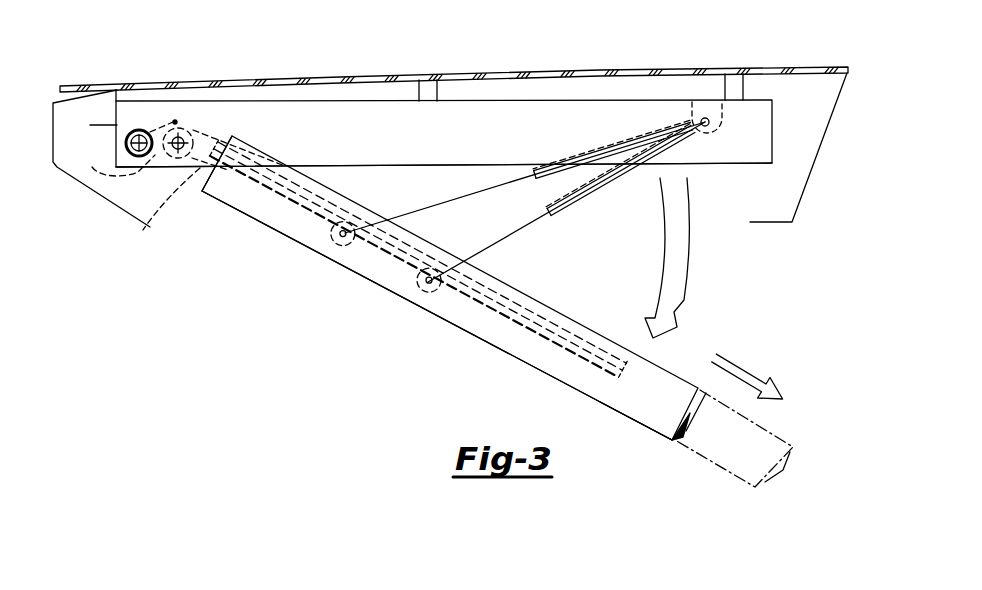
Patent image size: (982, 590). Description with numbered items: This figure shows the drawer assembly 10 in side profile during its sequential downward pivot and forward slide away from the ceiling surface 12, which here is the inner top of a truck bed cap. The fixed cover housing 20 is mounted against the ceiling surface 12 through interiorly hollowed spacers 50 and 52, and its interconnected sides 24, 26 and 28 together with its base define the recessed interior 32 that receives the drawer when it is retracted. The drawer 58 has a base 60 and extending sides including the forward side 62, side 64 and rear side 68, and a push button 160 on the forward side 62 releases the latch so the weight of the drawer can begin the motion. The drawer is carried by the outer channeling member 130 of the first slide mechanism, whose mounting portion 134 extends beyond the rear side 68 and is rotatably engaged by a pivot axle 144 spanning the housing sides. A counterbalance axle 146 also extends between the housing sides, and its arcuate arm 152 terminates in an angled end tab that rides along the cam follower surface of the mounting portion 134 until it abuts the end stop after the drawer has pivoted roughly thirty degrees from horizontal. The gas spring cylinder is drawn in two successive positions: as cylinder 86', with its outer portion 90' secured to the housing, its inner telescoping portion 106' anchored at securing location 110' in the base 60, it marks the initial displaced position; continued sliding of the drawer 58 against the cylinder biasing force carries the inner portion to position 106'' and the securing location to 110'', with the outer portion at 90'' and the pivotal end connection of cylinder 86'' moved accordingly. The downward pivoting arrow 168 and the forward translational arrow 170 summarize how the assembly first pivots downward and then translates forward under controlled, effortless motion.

The drawer assembly 10 is at (192, 273).
The ceiling surface 12 is at (519, 78).
The fixed cover housing 20 is at (328, 85).
The side of cover housing 24 is at (773, 147).
The side of cover housing 26 is at (358, 157).
The side of cover housing 28 is at (90, 125).
The recessed interior 32 is at (712, 190).
The spacers 50 is at (430, 90).
The spacers 52 is at (737, 87).
The drawer 58 is at (408, 358).
The drawer base 60 is at (517, 367).
The forward side of drawer 62 is at (687, 413).
The side of drawer 64 is at (643, 418).
The rear side of drawer 68 is at (207, 177).
The gas spring cylinder in initial displaced position 86' is at (452, 148).
The gas spring cylinder in continued sliding position 86'' is at (593, 255).
The outer portion in initial displaced position 90' is at (608, 146).
The outer portion in continued sliding position 90'' is at (620, 177).
The inner telescoping portion in initial displaced position 106' is at (525, 181).
The inner telescoping portion in continued sliding position 106'' is at (566, 202).
The securing location in initial displaced position 110' is at (296, 250).
The securing location in continued sliding position 110'' is at (378, 289).
The outer channeling member 130 is at (173, 227).
The mounting portion 134 is at (208, 124).
The pivot axle 144 is at (110, 160).
The counterbalance axle 146 is at (132, 112).
The arm 152 is at (158, 128).
The push button 160 is at (690, 443).
The downward pivoting arrow 168 is at (677, 293).
The forward translational arrow 170 is at (745, 370).